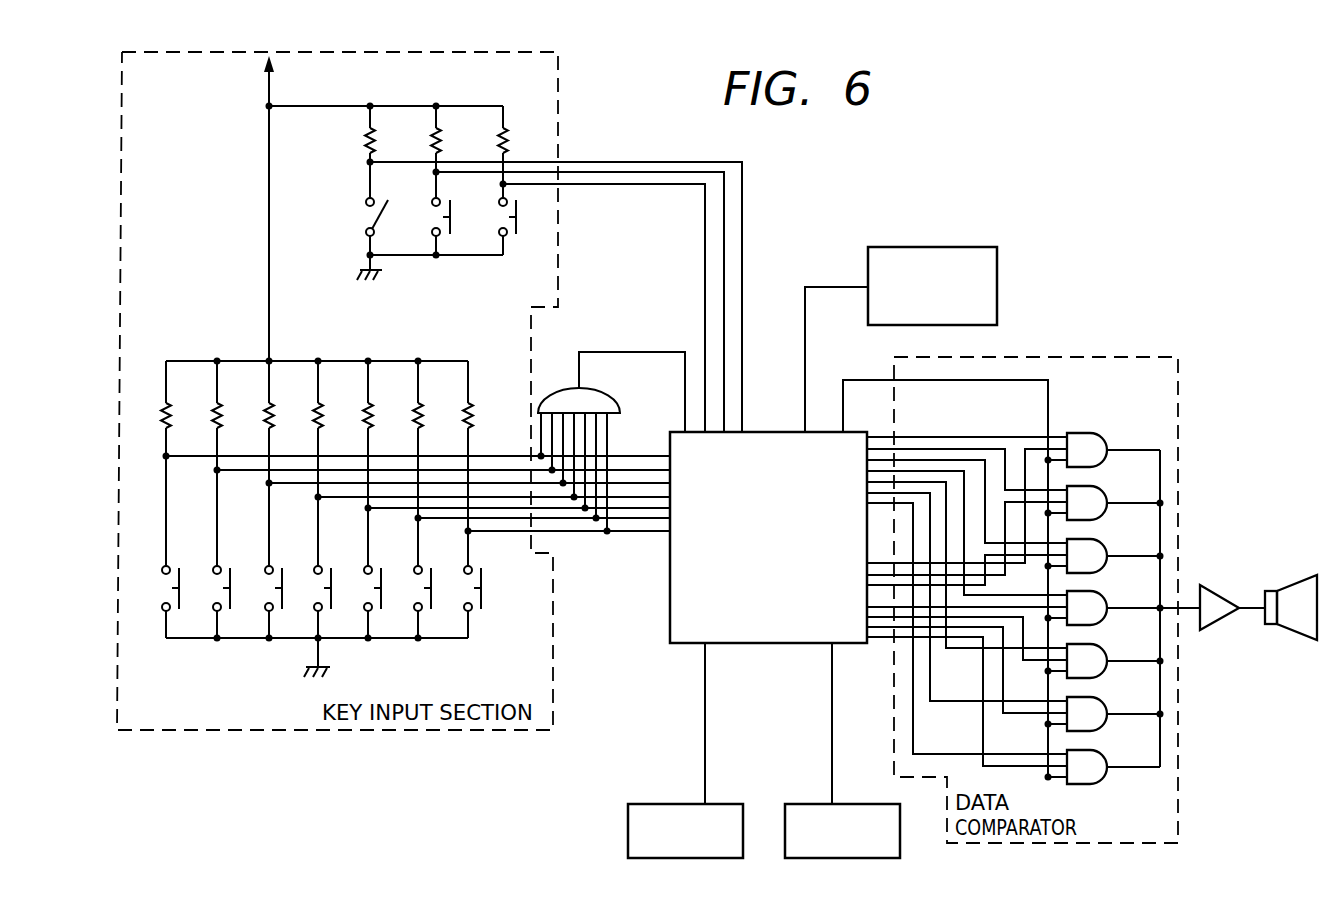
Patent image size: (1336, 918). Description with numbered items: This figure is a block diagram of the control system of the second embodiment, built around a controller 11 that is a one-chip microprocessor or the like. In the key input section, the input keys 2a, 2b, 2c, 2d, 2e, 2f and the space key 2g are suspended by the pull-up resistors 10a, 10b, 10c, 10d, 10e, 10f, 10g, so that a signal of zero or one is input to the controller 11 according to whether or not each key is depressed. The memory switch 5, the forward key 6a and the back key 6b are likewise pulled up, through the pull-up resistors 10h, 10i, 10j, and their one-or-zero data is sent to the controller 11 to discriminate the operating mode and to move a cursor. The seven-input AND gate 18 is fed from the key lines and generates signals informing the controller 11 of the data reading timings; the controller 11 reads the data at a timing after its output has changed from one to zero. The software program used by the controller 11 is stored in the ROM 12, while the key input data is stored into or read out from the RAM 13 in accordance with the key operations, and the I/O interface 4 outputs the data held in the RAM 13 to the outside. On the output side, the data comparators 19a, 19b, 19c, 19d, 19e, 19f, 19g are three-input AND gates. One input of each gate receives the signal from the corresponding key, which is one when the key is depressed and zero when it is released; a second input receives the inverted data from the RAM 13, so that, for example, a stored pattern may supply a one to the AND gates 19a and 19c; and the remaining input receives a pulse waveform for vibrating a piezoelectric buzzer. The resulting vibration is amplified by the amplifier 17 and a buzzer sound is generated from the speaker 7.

The input key 2a is at (186, 566).
The input key 2b is at (237, 566).
The input key 2c is at (289, 566).
The input key 2d is at (338, 566).
The input key 2e is at (388, 566).
The input key 2f is at (438, 566).
The space key 2g is at (494, 592).
The I/O interface 4 is at (976, 243).
The memory switch 5 is at (358, 212).
The forward key 6a is at (452, 238).
The back key 6b is at (518, 238).
The speaker 7 is at (1288, 586).
The pull-up resistor 10a is at (184, 412).
The pull-up resistor 10b is at (235, 412).
The pull-up resistor 10c is at (287, 412).
The pull-up resistor 10d is at (336, 412).
The pull-up resistor 10e is at (386, 412).
The pull-up resistor 10f is at (436, 412).
The pull-up resistor 10g is at (486, 412).
The pull-up resistor 10h is at (346, 152).
The pull-up resistor 10i is at (412, 152).
The pull-up resistor 10j is at (480, 152).
The controller 11 is at (670, 612).
The ROM 12 is at (652, 803).
The RAM 13 is at (792, 803).
The amplifier 17 is at (1216, 585).
The 7-input AND gate 18 is at (610, 400).
The data comparator 19a is at (1098, 434).
The data comparator 19b is at (1098, 487).
The data comparator 19c is at (1098, 540).
The data comparator 19d is at (1098, 592).
The data comparator 19e is at (1098, 645).
The data comparator 19f is at (1098, 698).
The data comparator 19g is at (1098, 751).